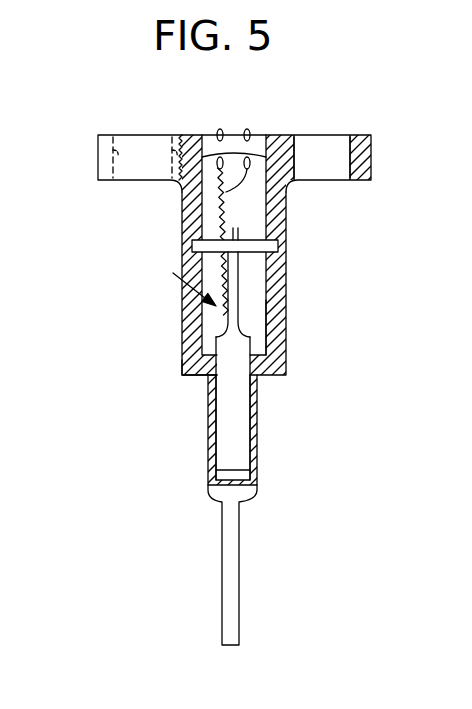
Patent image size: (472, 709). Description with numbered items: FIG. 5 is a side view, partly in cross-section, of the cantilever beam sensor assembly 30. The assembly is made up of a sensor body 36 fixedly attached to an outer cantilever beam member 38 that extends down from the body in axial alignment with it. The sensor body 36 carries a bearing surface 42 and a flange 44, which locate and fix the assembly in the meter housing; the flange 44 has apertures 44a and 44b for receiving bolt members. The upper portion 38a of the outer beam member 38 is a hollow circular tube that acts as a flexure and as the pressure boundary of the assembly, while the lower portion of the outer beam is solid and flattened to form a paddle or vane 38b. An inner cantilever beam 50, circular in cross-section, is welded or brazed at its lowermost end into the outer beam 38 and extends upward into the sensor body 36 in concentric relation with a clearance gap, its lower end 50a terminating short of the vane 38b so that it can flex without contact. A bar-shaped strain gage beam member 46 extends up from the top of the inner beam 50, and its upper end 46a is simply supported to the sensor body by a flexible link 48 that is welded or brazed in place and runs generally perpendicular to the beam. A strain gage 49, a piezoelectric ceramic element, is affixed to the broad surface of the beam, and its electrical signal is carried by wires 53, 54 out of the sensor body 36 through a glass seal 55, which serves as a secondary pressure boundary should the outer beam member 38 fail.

The cantilever beam sensor assembly 30 is at (236, 315).
The sensor body 36 is at (284, 343).
The outer cantilever beam member 38 is at (236, 387).
The upper portion of the outer beam member 38a is at (257, 414).
The vane 38b is at (240, 562).
The bearing surface 42 is at (184, 376).
The flange 44 is at (362, 138).
The aperture 44a is at (120, 131).
The aperture 44b is at (300, 138).
The strain gage beam member 46 is at (239, 309).
The upper end of the strain gage beam 46a is at (258, 224).
The flexible link 48 is at (271, 238).
The strain gage 49 is at (228, 320).
The inner cantilever beam member 50 is at (222, 428).
The lower end of the inner beam member 50a is at (232, 472).
The wire 53 is at (221, 130).
The wire 54 is at (249, 130).
The glass seal 55 is at (206, 140).